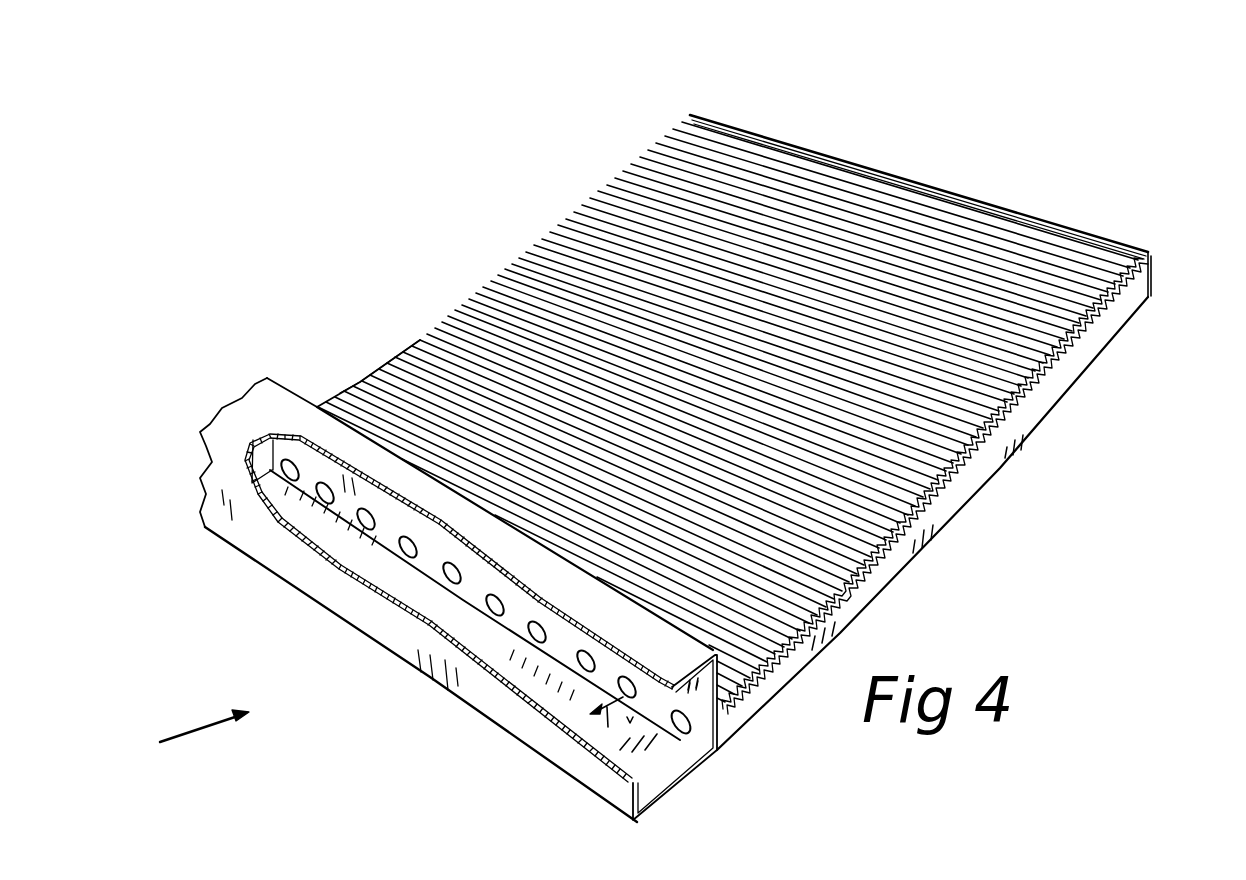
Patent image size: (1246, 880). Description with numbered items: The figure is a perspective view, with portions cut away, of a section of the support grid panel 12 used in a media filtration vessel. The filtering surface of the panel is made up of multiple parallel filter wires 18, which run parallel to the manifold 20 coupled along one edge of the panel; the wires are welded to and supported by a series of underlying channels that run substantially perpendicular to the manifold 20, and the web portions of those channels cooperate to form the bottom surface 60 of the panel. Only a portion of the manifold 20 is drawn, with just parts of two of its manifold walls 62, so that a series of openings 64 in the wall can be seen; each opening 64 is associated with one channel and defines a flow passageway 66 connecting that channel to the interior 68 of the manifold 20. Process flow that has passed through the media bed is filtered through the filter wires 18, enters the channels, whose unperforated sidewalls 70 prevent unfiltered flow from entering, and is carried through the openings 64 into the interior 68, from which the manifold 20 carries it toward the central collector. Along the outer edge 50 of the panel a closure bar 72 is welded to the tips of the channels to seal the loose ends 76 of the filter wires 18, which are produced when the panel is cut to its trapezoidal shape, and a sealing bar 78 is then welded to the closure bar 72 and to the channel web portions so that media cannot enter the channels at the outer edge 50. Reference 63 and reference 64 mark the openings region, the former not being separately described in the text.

The support grid panel 12 is at (185, 731).
The filter wires 18 is at (343, 392).
The manifold 20 is at (227, 475).
The outer edge 50 is at (955, 192).
The bottom surface 60 is at (947, 547).
The manifold walls 62 is at (420, 597).
The apertures 63 is at (404, 527).
The openings 64 is at (493, 610).
The flow passageways 66 is at (621, 724).
The interior 68 is at (657, 782).
The sidewalls 70 is at (1070, 382).
The closure bar 72 is at (1077, 228).
The loose ends 76 is at (793, 152).
The sealing bar 78 is at (1152, 272).